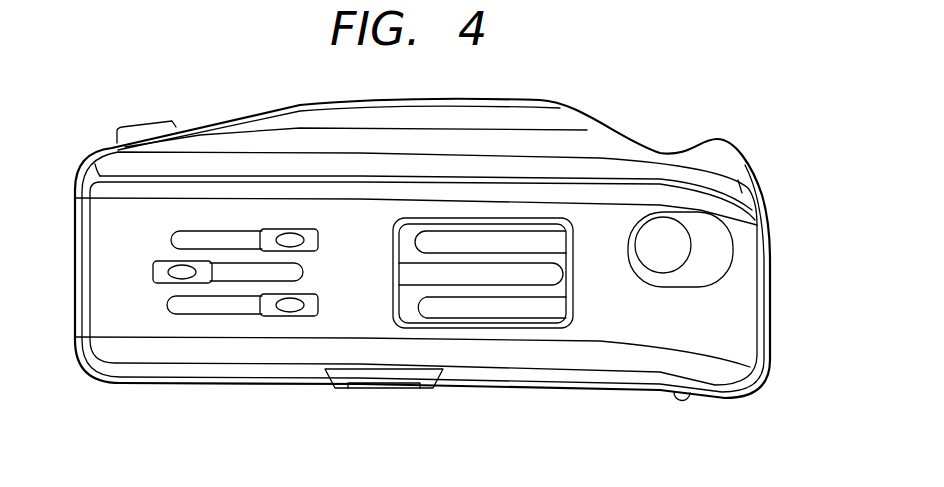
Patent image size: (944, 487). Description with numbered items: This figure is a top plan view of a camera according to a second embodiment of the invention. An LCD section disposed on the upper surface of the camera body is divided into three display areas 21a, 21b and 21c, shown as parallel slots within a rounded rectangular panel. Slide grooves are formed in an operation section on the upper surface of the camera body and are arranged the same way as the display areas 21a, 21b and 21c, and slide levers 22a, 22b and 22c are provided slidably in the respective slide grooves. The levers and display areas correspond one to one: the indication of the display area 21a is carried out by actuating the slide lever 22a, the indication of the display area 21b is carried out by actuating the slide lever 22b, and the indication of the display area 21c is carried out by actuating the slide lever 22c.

The display area 21a is at (540, 240).
The display area 21b is at (467, 275).
The display area 21c is at (542, 307).
The slide lever 22a is at (286, 240).
The slide lever 22b is at (181, 271).
The slide lever 22c is at (287, 310).